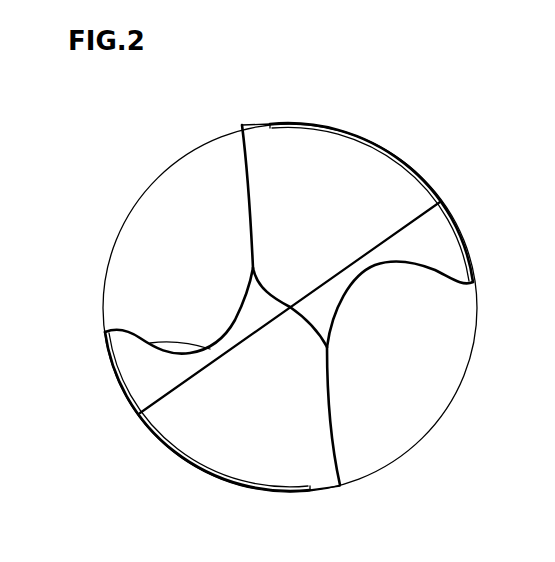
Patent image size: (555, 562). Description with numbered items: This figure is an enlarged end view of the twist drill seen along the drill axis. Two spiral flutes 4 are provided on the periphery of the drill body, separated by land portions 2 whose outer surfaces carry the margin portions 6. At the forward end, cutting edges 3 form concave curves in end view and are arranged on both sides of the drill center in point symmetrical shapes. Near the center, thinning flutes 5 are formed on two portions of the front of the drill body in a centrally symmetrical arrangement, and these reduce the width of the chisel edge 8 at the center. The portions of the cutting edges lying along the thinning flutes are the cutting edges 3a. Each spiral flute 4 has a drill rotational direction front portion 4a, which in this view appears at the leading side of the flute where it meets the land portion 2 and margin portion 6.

The land portion 2 is at (383, 147).
The cutting edge 3 is at (250, 192).
The cutting edge of portion along thinning flute 3a is at (272, 287).
The spiral flute 4 is at (138, 245).
The drill rotational direction front portion 4a is at (160, 348).
The thinning flute 5 is at (317, 303).
The margin portion 6 is at (255, 121).
The chisel edge 8 is at (290, 311).